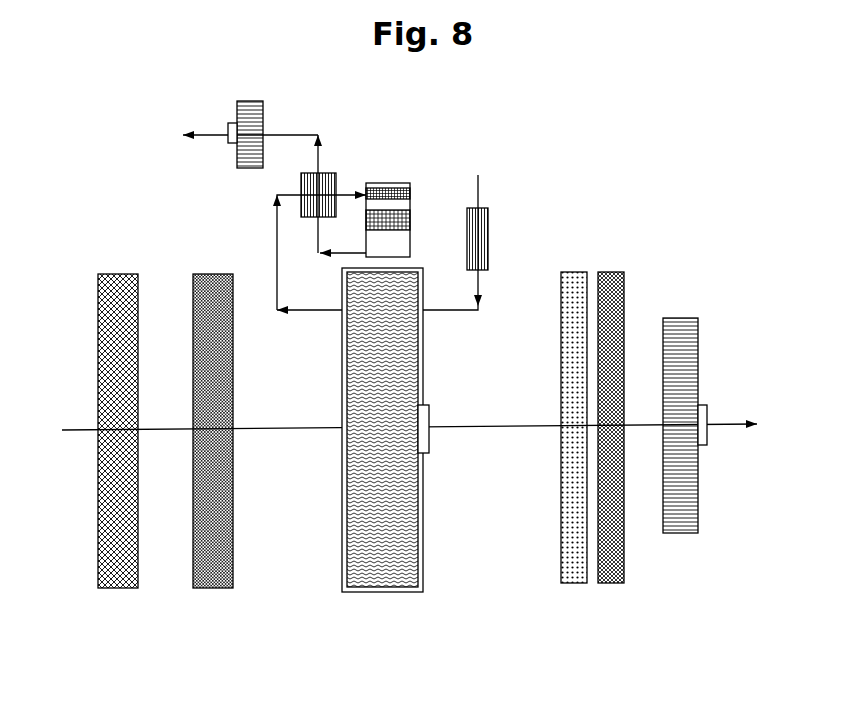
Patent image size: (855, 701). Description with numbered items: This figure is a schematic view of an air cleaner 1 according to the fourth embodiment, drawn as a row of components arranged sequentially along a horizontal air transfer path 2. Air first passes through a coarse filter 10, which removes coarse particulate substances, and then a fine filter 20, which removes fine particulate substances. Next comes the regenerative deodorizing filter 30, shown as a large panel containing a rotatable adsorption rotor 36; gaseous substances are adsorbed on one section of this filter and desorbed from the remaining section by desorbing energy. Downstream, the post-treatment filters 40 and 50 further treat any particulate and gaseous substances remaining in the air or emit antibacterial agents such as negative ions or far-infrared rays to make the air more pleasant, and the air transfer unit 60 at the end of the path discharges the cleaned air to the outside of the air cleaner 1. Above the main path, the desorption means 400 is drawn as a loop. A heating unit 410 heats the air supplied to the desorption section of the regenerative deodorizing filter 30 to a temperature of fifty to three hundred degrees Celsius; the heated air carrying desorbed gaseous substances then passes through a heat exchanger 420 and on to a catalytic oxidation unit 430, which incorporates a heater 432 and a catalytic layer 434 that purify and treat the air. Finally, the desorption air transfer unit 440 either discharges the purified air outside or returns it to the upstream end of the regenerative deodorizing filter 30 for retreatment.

The air cleaner 1 is at (655, 227).
The air transfer path 2 is at (727, 422).
The coarse filter 10 is at (120, 588).
The fine filter 20 is at (213, 588).
The regenerative deodorizing filter 30 is at (421, 472).
The adsorption rotor 36 is at (410, 560).
The post-treatment filter 40 is at (573, 583).
The post-treatment filter 50 is at (613, 583).
The air transfer unit 60 is at (682, 533).
The desorption means 400 is at (361, 200).
The heating unit 410 is at (490, 223).
The heat exchanger 420 is at (330, 177).
The catalytic oxidation unit 430 is at (419, 193).
The heater 432 is at (398, 192).
The catalytic layer 434 is at (400, 228).
The desorption air transfer unit 440 is at (245, 113).